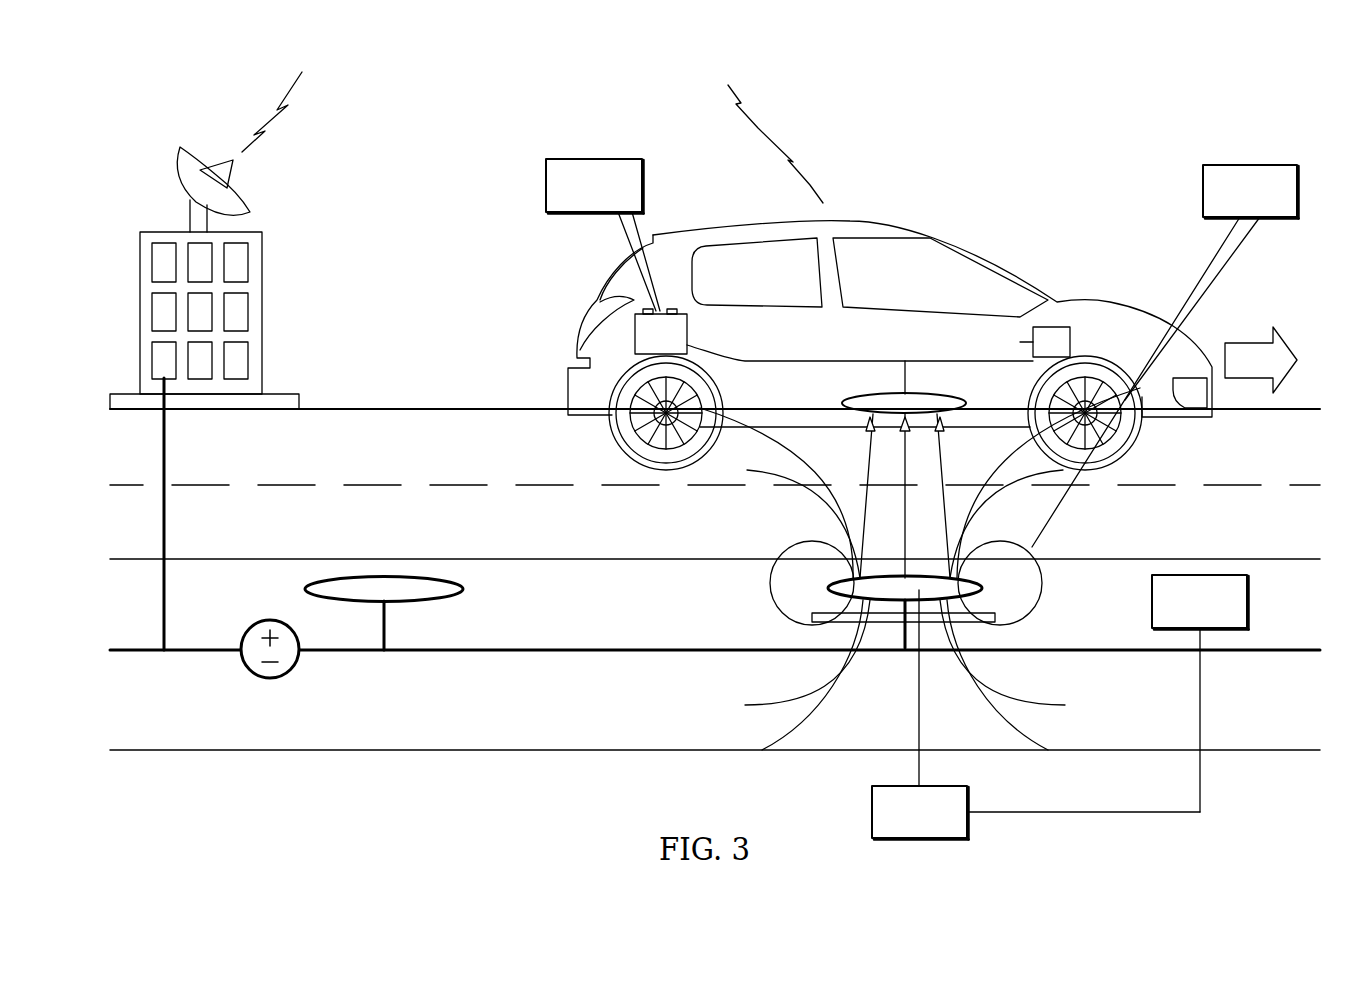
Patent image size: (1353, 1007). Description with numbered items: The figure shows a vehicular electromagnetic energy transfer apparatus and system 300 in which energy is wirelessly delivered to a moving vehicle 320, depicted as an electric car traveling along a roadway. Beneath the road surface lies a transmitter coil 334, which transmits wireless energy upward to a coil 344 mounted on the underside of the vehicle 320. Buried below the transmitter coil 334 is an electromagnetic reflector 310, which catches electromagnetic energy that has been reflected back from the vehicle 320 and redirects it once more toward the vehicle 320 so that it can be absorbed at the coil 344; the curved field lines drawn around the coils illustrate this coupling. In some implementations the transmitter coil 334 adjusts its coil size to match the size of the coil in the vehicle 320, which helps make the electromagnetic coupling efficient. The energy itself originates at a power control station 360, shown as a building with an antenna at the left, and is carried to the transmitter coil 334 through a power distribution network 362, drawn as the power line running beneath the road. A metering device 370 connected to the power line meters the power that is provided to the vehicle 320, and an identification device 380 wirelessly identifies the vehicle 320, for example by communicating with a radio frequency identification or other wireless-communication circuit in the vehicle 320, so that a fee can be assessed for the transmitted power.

The vehicular electromagnetic energy transfer apparatus and system 300 is at (1176, 120).
The electromagnetic reflector 310 is at (982, 623).
The vehicle 320 is at (745, 226).
The transmitter coil 334 is at (836, 584).
The coil 344 is at (842, 400).
The power control station 360 is at (322, 150).
The power distribution network 362 is at (659, 648).
The metering device 370 is at (872, 797).
The identification device 380 is at (1205, 575).